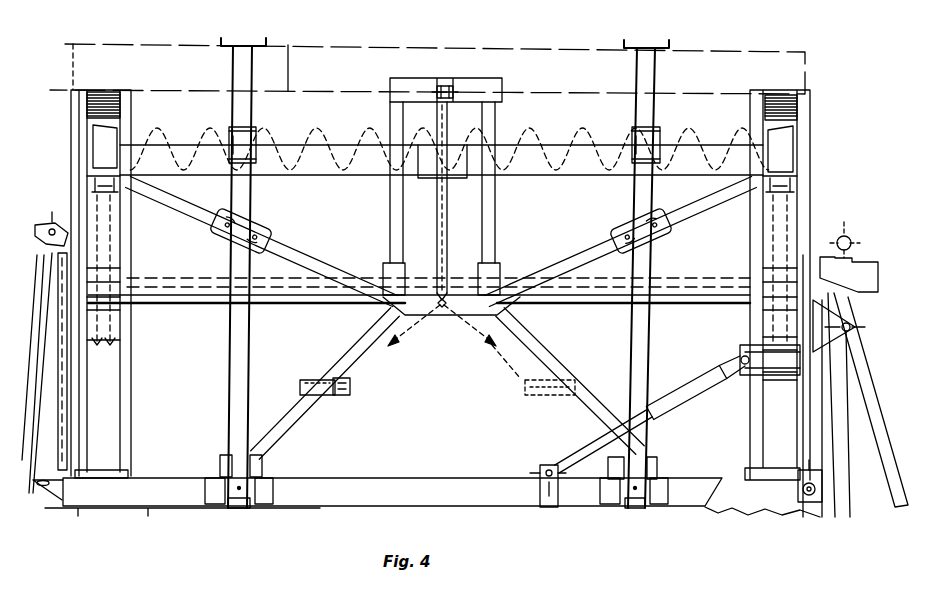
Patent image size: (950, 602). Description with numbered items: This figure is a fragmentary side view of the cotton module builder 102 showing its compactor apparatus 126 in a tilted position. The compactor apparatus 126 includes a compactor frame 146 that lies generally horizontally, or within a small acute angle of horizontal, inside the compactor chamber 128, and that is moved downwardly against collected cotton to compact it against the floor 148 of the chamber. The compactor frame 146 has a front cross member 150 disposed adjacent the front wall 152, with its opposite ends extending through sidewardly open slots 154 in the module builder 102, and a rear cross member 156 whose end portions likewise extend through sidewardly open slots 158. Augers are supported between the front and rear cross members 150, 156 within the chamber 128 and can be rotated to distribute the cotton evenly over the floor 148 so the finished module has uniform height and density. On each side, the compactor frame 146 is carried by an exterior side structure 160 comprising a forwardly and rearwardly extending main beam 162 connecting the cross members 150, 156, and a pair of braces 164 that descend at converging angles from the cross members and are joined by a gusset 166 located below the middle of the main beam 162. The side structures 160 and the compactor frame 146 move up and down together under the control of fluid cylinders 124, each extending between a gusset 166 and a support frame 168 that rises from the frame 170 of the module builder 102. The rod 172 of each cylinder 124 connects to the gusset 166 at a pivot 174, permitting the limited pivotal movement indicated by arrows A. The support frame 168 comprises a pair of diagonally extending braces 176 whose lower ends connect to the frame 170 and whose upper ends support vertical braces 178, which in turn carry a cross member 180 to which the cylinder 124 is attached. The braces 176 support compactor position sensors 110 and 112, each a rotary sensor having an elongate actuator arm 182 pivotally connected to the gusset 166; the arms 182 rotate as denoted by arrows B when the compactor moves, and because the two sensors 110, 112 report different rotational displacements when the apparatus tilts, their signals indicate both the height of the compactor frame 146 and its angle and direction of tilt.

The module builder 102 is at (808, 94).
The compactor position sensor 110 is at (330, 395).
The compactor position sensor 112 is at (540, 395).
The fluid cylinder 124 is at (452, 118).
The compactor apparatus 126 is at (797, 152).
The compactor chamber 128 is at (690, 455).
The compactor frame 146 is at (797, 166).
The floor 148 is at (422, 478).
The front cross member 150 is at (93, 143).
The front wall 152 is at (78, 178).
The sidewardly open slot 154 is at (120, 112).
The rear cross member 156 is at (797, 140).
The sidewardly open slot 158 is at (770, 95).
The exterior side structure 160 is at (690, 180).
The main beam 162 is at (700, 150).
The brace 164 is at (316, 255).
The gusset 166 is at (455, 320).
The support frame 168 is at (400, 80).
The frame 170 is at (527, 507).
The rod 172 is at (434, 294).
The pivot 174 is at (440, 307).
The diagonally extending brace 176 is at (272, 440).
The vertical brace 178 is at (390, 240).
The cross member 180 is at (460, 86).
The actuator arm 182 is at (352, 381).